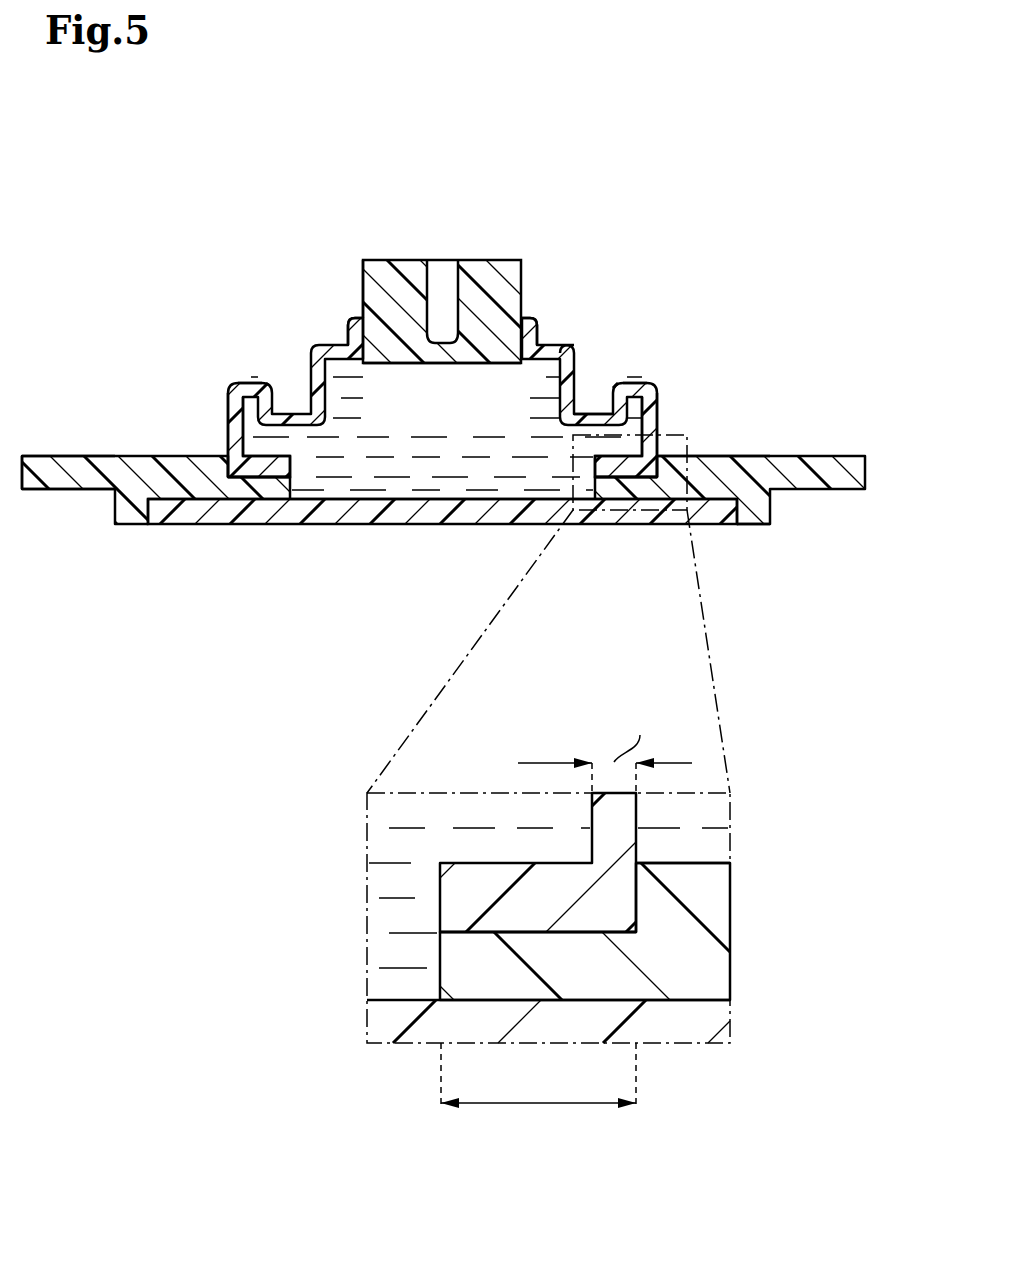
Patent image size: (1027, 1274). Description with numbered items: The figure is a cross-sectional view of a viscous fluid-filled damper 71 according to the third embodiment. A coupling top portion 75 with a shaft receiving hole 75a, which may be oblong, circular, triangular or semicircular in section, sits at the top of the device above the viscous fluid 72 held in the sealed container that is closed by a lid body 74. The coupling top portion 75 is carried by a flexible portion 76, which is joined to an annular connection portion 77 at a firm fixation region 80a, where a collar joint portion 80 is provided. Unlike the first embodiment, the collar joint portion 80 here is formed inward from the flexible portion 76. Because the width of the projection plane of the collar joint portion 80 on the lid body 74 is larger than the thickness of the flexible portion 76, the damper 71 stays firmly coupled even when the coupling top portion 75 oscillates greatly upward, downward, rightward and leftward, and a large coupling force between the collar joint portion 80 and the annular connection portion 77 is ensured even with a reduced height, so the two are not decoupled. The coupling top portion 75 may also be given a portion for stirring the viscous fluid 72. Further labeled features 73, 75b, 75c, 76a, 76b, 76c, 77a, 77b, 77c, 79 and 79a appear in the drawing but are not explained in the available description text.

The viscous fluid-filled damper 71 is at (708, 209).
The viscous fluid 72 is at (345, 440).
The gap between membrane and mass 73 is at (571, 341).
The lid body 74 is at (226, 527).
The coupling top portion 75 is at (419, 258).
The shaft receiving hole 75a is at (446, 260).
The bottom surface of mass member 75b is at (442, 365).
The side surface of mass member 75c is at (363, 296).
The flexible portion 76 is at (577, 361).
The bottom portion of membrane fold 76a is at (603, 413).
The top portion of membrane fold 76b is at (268, 384).
The top portion of membrane fold 76c is at (637, 387).
The annular connection portion 77 is at (842, 491).
The upper surface of housing 77a is at (657, 457).
The lower surface of housing wall 77b is at (732, 525).
The flange of housing 77c is at (92, 455).
The mounting portion of membrane 79 is at (526, 322).
The protrusion of mounting portion 79a is at (358, 315).
The collar joint portion 80 is at (480, 862).
The firm fixation region 80a is at (615, 480).